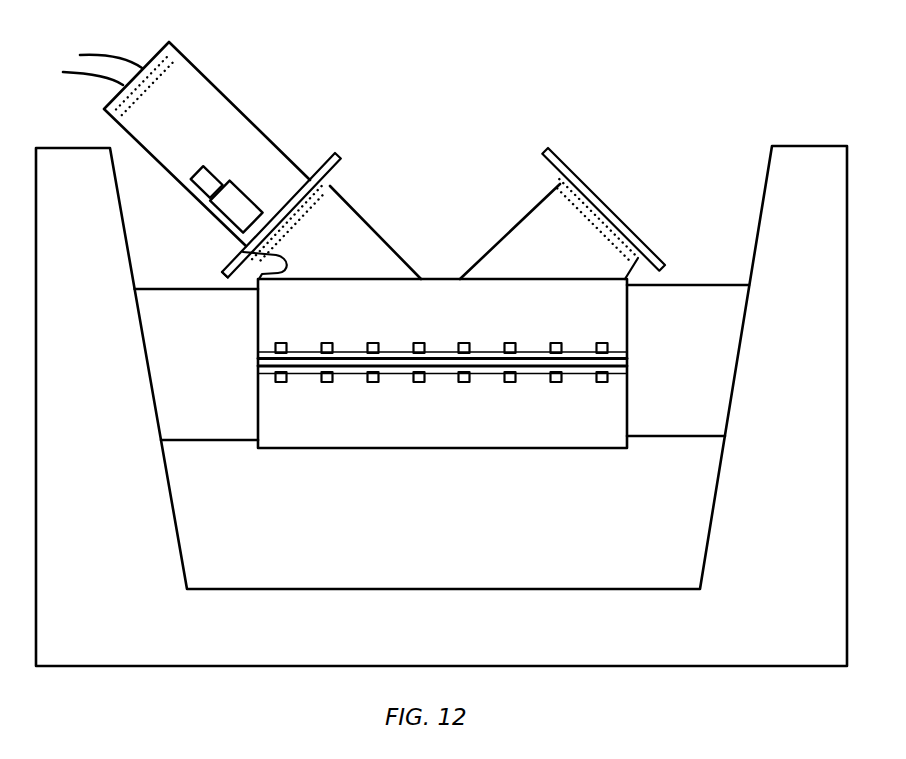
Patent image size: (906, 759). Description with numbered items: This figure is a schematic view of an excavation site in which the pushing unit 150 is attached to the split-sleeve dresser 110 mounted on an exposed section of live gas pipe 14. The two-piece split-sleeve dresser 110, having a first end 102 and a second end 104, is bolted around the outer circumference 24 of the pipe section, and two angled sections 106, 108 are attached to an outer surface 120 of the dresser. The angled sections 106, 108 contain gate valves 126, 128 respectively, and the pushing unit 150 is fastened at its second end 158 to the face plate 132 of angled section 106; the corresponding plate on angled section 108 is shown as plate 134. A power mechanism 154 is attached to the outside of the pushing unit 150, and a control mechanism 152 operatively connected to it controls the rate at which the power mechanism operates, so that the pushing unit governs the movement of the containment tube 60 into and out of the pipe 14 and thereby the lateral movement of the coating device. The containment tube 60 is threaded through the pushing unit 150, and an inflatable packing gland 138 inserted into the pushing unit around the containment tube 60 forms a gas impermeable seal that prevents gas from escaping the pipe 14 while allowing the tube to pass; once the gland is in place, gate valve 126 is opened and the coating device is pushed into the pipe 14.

The live gas pipe 14 is at (685, 445).
The outer circumference 24 is at (640, 440).
The containment tube 60 is at (125, 57).
The first end 102 is at (257, 390).
The second end 104 is at (628, 402).
The angled section 106 is at (372, 218).
The angled section 108 is at (517, 223).
The split-sleeve dresser 110 is at (482, 450).
The outer surface 120 is at (402, 435).
The gate valve 126 is at (318, 205).
The gate valve 128 is at (580, 218).
The face plate 132 is at (317, 172).
The right plate 134 is at (650, 198).
The inflatable packing gland 138 is at (152, 92).
The pushing unit 150 is at (233, 105).
The control mechanism 152 is at (199, 172).
The power mechanism 154 is at (248, 198).
The second end 158 is at (221, 268).